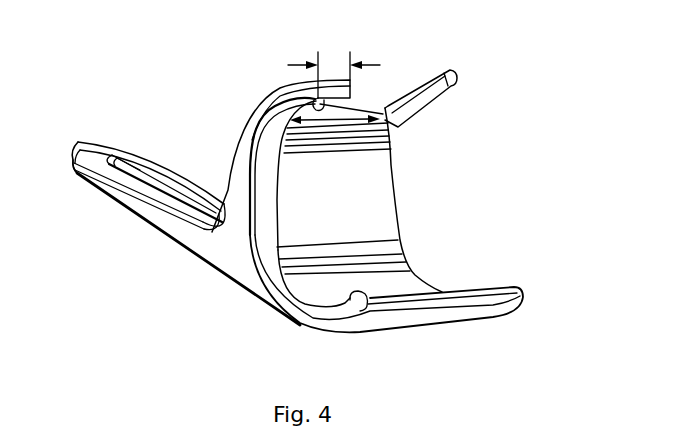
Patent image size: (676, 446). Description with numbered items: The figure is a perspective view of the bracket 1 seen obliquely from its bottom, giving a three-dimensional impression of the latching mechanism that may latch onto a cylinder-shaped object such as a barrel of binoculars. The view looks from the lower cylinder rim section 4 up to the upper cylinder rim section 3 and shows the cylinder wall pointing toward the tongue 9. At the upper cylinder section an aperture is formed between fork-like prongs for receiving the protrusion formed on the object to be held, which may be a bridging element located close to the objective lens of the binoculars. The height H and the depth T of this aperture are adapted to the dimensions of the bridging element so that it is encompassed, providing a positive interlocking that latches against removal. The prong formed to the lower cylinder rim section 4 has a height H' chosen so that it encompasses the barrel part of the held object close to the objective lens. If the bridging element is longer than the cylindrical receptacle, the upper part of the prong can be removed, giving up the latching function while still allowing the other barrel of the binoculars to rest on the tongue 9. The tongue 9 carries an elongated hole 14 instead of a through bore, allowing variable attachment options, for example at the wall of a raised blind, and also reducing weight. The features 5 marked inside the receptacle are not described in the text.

The bracket 1 is at (182, 92).
The upper cylinder rim section 3 is at (393, 200).
The lower cylinder rim section 4 is at (245, 263).
The ribs 5 is at (320, 105).
The tongue 9 is at (100, 183).
The elongated hole 14 is at (170, 190).
The height of the aperture H is at (392, 140).
The height of the prong H' is at (334, 75).
The depth of the aperture T is at (420, 83).